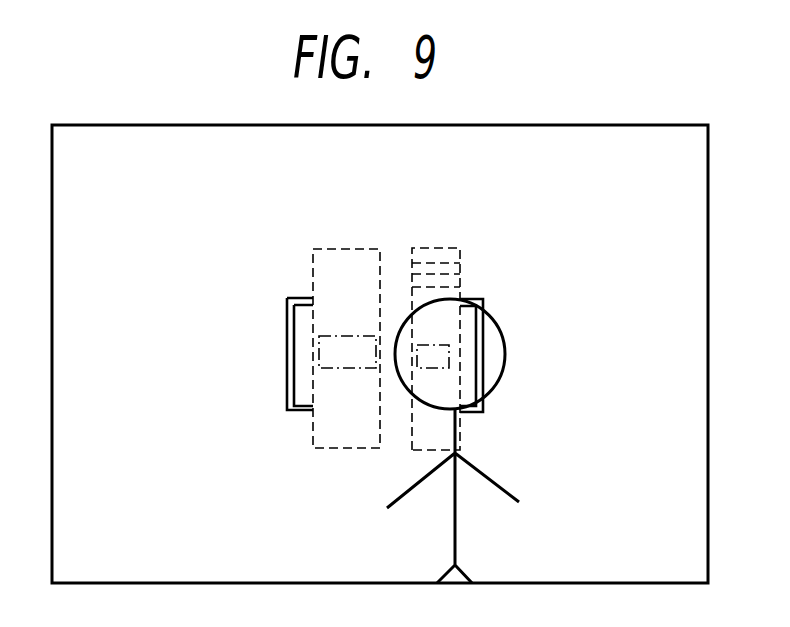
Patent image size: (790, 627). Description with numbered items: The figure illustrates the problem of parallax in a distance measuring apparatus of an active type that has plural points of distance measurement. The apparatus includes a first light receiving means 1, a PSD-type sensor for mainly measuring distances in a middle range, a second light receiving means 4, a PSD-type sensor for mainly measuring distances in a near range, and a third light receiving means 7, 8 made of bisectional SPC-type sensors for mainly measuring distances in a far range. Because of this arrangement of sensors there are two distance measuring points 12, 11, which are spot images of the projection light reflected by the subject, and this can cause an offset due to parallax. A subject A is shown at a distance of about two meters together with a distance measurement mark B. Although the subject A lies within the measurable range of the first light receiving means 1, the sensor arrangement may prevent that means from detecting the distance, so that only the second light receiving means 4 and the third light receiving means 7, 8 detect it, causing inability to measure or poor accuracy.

The first light receiving sensor 1 is at (313, 265).
The far side SPC of third light receiving sensor 7 is at (462, 250).
The near side SPC of third light receiving sensor 8 is at (462, 276).
The distance measuring point 11 is at (330, 368).
The distance measuring point 12 is at (425, 368).
The second light receiving sensor 4 is at (458, 432).
The subject A is at (500, 336).
The distance measurement mark B is at (485, 307).